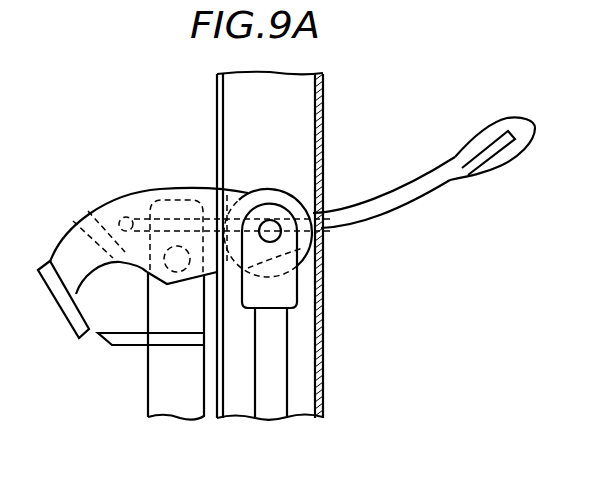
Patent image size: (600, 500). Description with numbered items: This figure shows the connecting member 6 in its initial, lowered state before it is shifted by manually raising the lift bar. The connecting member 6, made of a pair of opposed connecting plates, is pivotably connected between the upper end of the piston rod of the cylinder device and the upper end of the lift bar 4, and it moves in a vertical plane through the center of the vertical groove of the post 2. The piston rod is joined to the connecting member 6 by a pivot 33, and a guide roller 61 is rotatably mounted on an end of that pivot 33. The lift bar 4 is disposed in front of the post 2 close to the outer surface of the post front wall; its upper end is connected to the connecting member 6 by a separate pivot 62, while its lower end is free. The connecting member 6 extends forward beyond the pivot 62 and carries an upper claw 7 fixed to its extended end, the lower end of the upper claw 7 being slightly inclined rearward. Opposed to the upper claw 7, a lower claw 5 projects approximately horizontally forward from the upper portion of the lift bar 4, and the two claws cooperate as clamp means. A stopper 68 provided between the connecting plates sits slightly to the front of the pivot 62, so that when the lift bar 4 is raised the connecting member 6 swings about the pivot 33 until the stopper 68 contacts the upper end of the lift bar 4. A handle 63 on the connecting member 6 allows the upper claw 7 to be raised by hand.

The post 2 is at (324, 84).
The lift bar 4 is at (153, 390).
The lower claw 5 is at (115, 346).
The connecting member 6 is at (150, 189).
The upper claw 7 is at (60, 303).
The pivot 33 is at (279, 239).
The guide roller 61 is at (293, 188).
The pivot 62 is at (166, 263).
The handle 63 is at (418, 193).
The stopper 68 is at (85, 218).